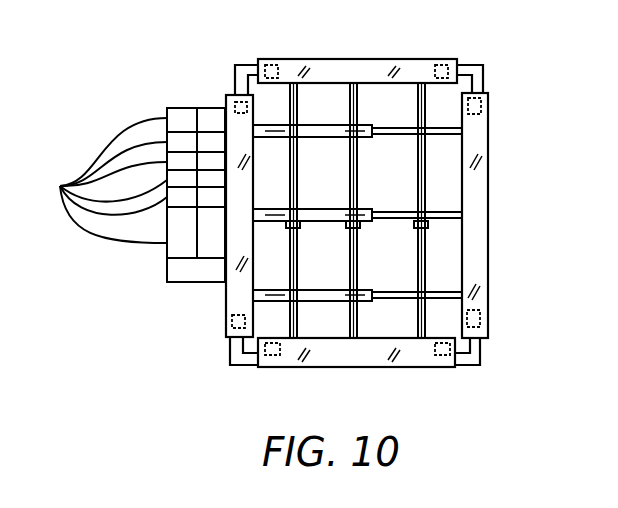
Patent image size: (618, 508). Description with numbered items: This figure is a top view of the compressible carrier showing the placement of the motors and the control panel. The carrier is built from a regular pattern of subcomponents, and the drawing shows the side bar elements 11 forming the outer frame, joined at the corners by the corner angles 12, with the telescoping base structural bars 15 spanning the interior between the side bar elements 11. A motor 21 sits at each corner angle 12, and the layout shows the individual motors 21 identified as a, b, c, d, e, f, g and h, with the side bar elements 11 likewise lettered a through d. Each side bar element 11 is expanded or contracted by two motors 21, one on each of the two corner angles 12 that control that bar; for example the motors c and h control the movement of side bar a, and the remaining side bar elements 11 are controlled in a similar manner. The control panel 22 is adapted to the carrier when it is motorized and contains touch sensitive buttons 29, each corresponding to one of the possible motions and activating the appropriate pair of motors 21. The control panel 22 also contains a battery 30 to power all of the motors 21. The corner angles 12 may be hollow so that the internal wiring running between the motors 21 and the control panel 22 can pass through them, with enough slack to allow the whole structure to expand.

The side bar element 11 is at (477, 203).
The corner angle 12 is at (480, 362).
The telescoping base structural bar 15 is at (421, 178).
The motor 21 is at (273, 70).
The control panel 22 is at (196, 107).
The touch sensitive buttons 29 is at (60, 186).
The battery 30 is at (183, 283).
The motor designation a is at (282, 70).
The motor designation b is at (442, 64).
The motor designation c is at (482, 104).
The motor designation d is at (479, 327).
The motor designation e is at (447, 355).
The motor designation f is at (272, 355).
The motor designation g is at (232, 330).
The motor designation h is at (233, 98).